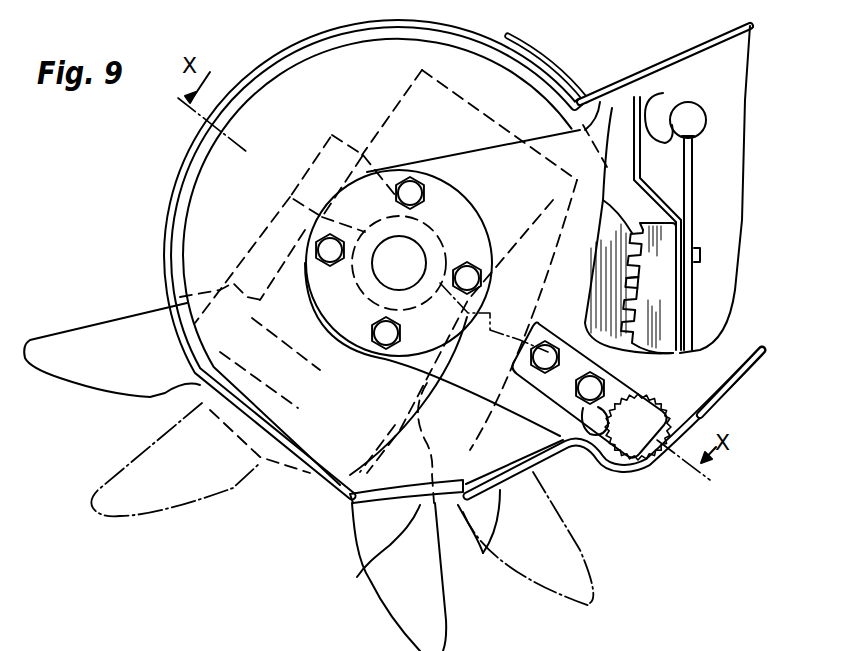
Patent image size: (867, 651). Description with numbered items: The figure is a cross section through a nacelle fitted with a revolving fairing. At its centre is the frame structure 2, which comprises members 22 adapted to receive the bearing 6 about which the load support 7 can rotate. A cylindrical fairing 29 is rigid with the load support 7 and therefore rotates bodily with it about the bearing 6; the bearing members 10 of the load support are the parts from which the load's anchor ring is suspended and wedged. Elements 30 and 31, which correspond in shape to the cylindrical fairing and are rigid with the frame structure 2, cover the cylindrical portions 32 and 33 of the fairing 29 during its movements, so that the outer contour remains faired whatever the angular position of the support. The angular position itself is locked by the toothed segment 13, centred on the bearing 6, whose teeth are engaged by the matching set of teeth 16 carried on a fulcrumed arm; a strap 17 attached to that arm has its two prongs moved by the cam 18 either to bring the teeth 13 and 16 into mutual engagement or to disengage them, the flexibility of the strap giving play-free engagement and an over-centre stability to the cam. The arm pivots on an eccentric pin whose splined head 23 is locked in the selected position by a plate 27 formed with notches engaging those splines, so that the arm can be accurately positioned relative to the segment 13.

The frame structure 2 is at (724, 374).
The bearing 6 is at (358, 279).
The load support 7 is at (385, 115).
The bearing member 10 is at (88, 338).
The toothed segment 13 is at (645, 281).
The set of teeth 16 is at (634, 291).
The strap 17 is at (670, 172).
The cam 18 is at (664, 104).
The member 22 is at (334, 483).
The splined head 23 is at (655, 447).
The plate 27 is at (592, 408).
The cylindrical fairing 29 is at (272, 58).
The cover element 30 is at (553, 72).
The cover element 31 is at (483, 553).
The cylindrical portion 32 is at (483, 40).
The cylindrical portion 33 is at (373, 560).